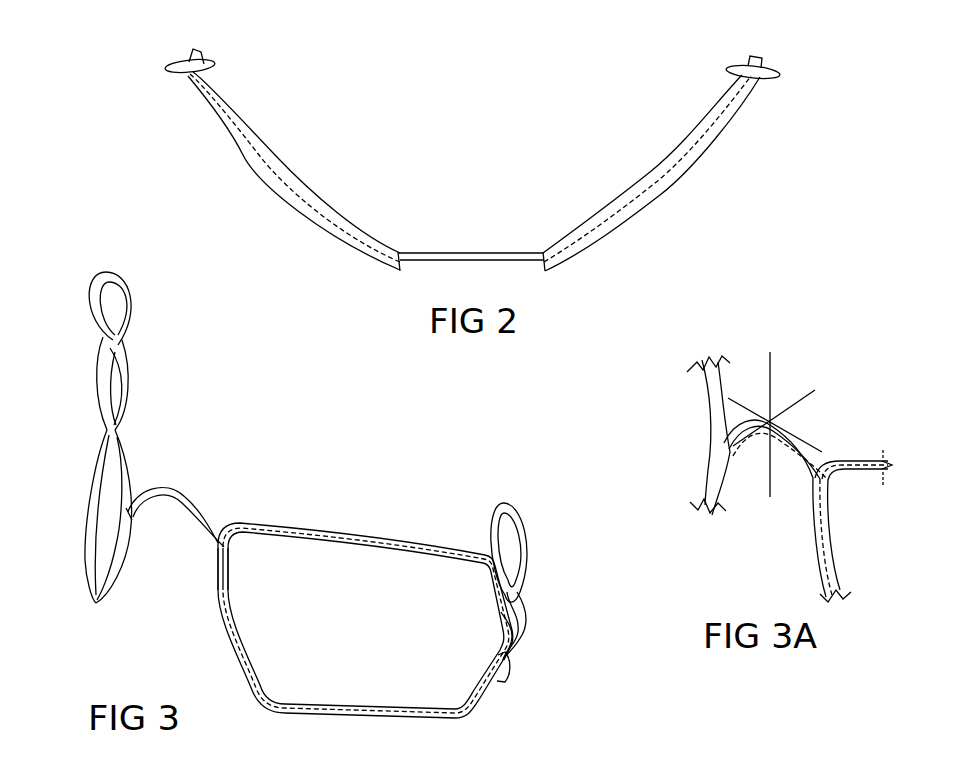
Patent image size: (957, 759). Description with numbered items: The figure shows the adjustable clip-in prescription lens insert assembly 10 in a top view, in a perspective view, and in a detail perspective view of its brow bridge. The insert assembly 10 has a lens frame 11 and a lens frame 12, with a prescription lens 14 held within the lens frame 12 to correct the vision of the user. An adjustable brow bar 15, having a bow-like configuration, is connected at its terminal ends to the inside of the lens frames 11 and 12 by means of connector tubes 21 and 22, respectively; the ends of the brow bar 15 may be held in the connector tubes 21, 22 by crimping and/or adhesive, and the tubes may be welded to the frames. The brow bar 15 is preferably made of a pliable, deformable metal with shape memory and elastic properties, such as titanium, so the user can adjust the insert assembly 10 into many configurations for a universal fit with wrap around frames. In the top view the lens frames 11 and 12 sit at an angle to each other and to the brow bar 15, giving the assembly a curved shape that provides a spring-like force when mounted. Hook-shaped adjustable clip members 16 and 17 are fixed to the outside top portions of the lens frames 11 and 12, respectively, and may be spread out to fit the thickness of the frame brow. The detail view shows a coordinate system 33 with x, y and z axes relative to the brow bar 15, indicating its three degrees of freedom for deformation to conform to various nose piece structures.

In FIG. 2, the adjustable clip-in prescription lens insert assembly 10 is at (590, 137).
In FIG. 3, the adjustable clip-in prescription lens insert assembly 10 is at (410, 483).
In FIG. 2, the lens frame 11 is at (290, 168).
In FIG. 3, the lens frame 11 is at (110, 423).
In FIG. 3A, the lens frame 11 is at (710, 422).
In FIG. 2, the lens frame 12 is at (665, 162).
In FIG. 3, the lens frame 12 is at (290, 523).
In FIG. 3A, the lens frame 12 is at (830, 563).
In FIG. 3, the prescription lens 14 is at (520, 628).
In FIG. 2, the adjustable brow bar 15 is at (472, 254).
In FIG. 3, the adjustable brow bar 15 is at (177, 490).
In FIG. 3A, the adjustable brow bar 15 is at (805, 462).
In FIG. 2, the hook-shaped adjustable clip member 16 is at (165, 65).
In FIG. 3, the hook-shaped adjustable clip member 16 is at (70, 283).
In FIG. 2, the hook-shaped adjustable clip member 17 is at (793, 70).
In FIG. 3, the hook-shaped adjustable clip member 17 is at (537, 527).
In FIG. 2, the connector tube 21 is at (404, 253).
In FIG. 3, the connector tube 21 is at (128, 533).
In FIG. 2, the connector tube 22 is at (544, 253).
In FIG. 3, the connector tube 22 is at (226, 590).
In FIG. 3A, the connector tube 22 is at (830, 520).
In FIG. 3A, the coordinate system 33 is at (822, 420).